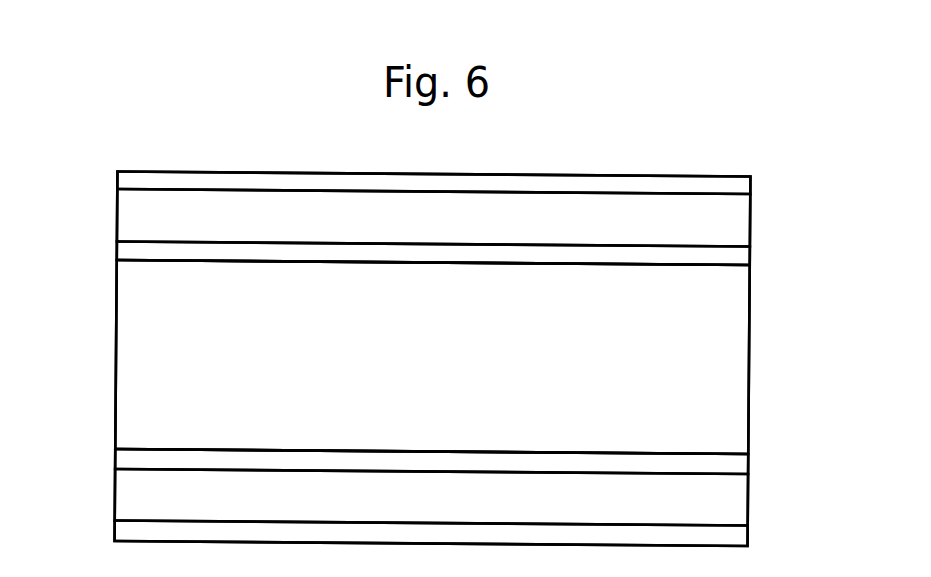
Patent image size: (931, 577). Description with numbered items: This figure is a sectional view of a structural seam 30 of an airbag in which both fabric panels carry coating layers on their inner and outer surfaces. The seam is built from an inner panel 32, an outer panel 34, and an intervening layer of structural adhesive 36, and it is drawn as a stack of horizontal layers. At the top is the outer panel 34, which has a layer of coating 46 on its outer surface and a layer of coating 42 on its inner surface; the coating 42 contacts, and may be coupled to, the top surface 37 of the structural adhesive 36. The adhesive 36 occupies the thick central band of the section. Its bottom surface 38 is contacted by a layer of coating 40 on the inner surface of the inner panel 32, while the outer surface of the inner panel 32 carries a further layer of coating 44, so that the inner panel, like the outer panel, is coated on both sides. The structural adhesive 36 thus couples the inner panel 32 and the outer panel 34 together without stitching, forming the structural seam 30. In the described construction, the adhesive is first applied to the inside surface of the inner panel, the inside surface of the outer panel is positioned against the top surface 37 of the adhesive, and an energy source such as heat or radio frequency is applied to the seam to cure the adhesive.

The structural seam 30 is at (76, 203).
The coating 46 is at (735, 185).
The outer panel 34 is at (735, 220).
The coating 42 is at (735, 256).
The top surface 37 is at (715, 265).
The structural adhesive 36 is at (735, 356).
The bottom surface 38 is at (714, 452).
The coating 40 is at (735, 465).
The inner panel 32 is at (735, 498).
The coating 44 is at (735, 536).